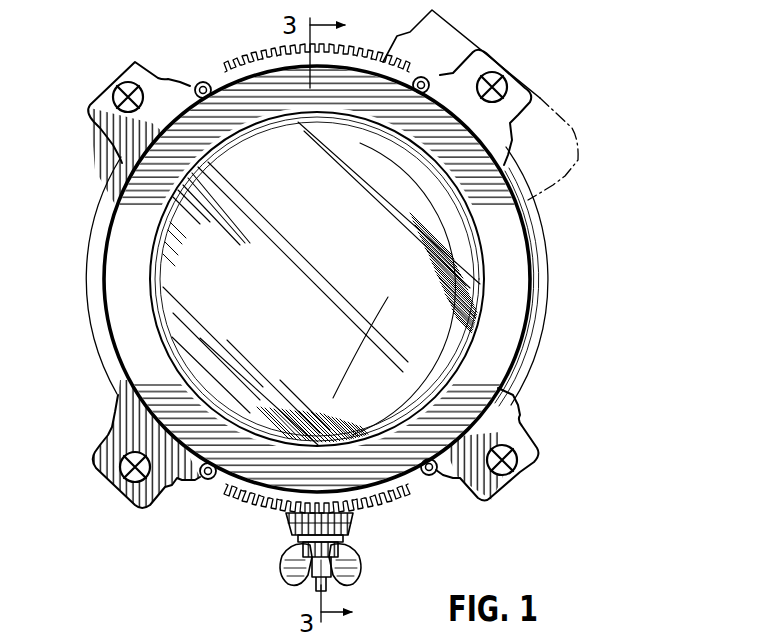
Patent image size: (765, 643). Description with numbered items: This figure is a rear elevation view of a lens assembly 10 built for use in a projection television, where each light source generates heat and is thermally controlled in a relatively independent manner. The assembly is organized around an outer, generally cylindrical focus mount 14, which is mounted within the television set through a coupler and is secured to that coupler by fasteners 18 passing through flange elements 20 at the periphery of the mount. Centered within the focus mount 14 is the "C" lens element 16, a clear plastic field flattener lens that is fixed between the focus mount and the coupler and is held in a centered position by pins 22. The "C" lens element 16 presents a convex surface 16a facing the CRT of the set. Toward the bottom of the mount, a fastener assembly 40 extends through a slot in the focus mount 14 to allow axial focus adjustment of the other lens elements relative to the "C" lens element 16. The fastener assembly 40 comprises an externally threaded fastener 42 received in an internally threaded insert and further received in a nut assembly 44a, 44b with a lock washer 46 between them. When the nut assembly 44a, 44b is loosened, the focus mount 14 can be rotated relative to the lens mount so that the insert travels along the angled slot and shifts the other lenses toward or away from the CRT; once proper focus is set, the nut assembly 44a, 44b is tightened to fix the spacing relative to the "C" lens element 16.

The lens assembly 10 is at (669, 151).
The focus mount 14 is at (548, 240).
The "C" lens element 16 is at (483, 320).
The convex surface 16a is at (344, 258).
The fasteners 18 is at (118, 88).
The flange elements 20 is at (100, 128).
The pins 22 is at (209, 97).
The fastener assembly 40 is at (310, 561).
The externally threaded fastener 42 is at (311, 586).
The nut assembly 44a is at (351, 518).
The nut assembly 44b is at (362, 574).
The lock washer 46 is at (343, 539).